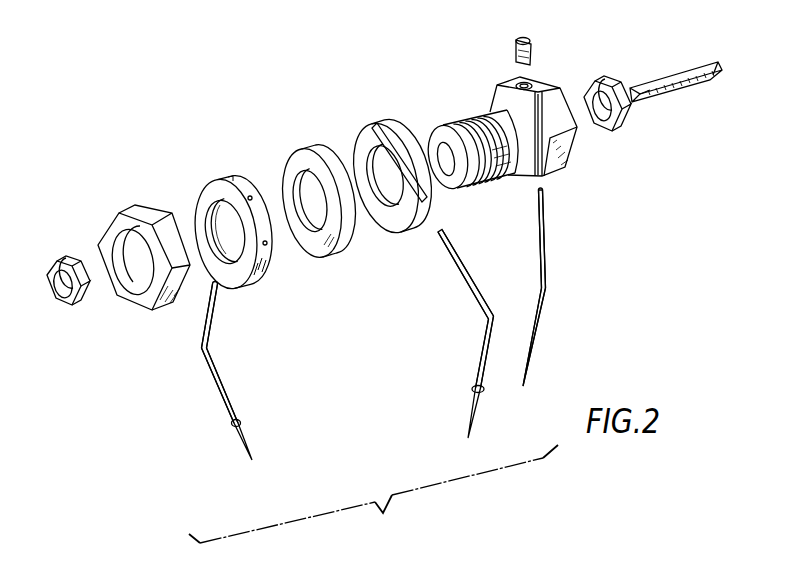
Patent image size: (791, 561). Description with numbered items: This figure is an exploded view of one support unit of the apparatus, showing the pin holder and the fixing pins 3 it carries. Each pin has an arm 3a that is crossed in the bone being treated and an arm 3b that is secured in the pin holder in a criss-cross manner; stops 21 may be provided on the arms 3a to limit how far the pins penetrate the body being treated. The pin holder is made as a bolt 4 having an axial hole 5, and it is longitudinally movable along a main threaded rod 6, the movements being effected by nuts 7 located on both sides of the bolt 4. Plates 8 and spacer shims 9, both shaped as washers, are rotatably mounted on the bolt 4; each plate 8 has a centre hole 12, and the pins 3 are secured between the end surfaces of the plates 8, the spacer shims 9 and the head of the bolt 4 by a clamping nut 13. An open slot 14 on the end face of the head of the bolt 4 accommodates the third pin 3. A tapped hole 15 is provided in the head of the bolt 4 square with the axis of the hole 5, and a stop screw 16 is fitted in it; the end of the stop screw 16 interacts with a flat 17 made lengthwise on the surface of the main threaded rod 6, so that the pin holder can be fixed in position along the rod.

The fixing pin 3 is at (208, 350).
The arm of the pin 3a is at (228, 402).
The arm of the pin 3b is at (217, 316).
The bolt 4 is at (498, 98).
The axial hole 5 is at (441, 150).
The main threaded rod 6 is at (705, 86).
The nut 7 is at (65, 258).
The plate 8 is at (230, 177).
The spacer shim 9 is at (308, 148).
The centre hole 12 is at (393, 190).
The clamping nut 13 is at (141, 213).
The open slot 14 is at (533, 176).
The tapped hole 15 is at (532, 86).
The stop screw 16 is at (533, 44).
The flat 17 is at (679, 74).
The stop 21 is at (241, 425).